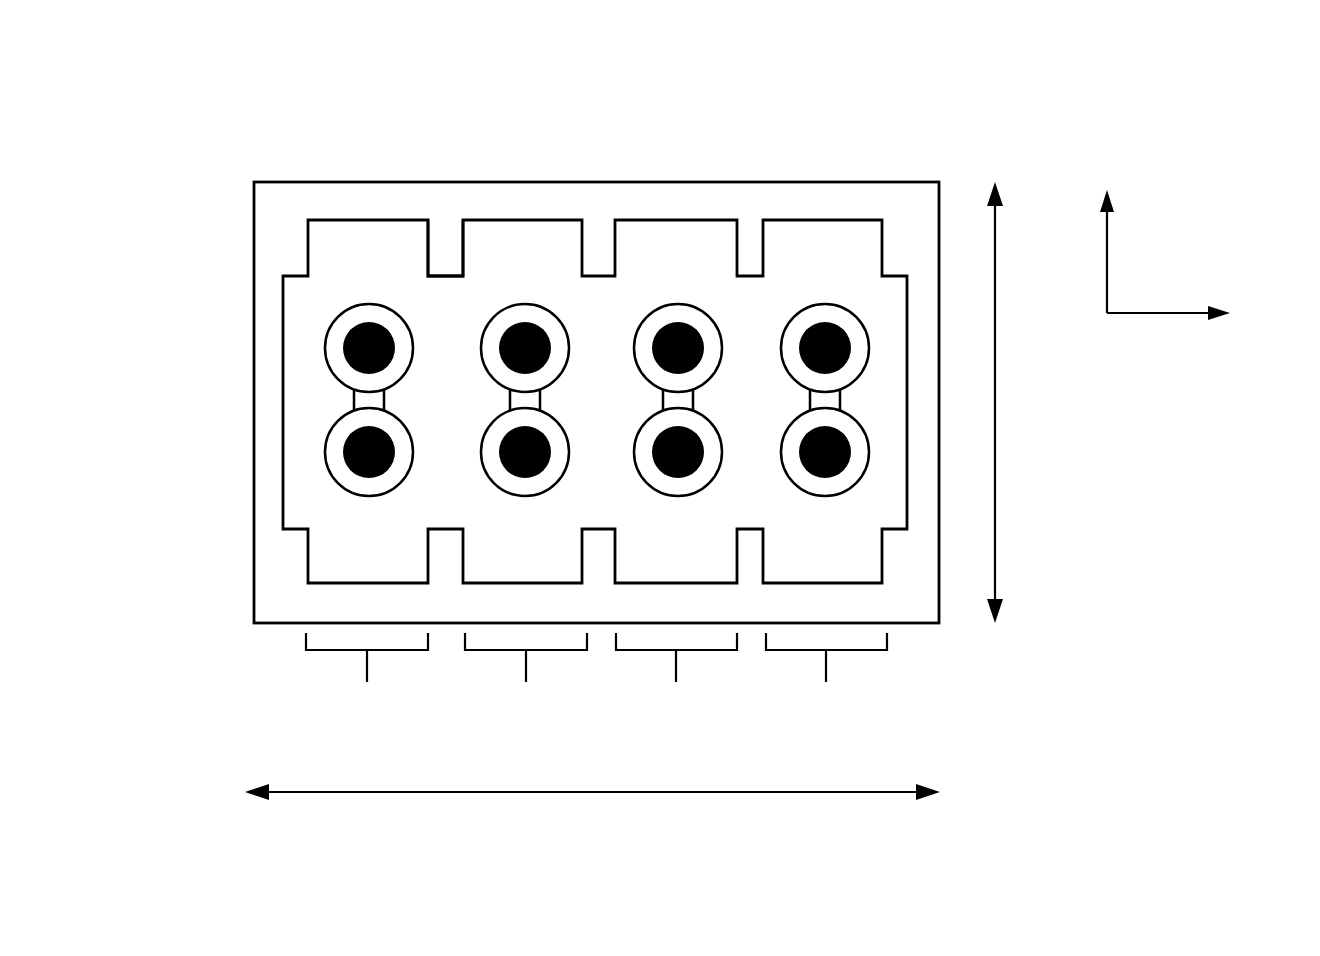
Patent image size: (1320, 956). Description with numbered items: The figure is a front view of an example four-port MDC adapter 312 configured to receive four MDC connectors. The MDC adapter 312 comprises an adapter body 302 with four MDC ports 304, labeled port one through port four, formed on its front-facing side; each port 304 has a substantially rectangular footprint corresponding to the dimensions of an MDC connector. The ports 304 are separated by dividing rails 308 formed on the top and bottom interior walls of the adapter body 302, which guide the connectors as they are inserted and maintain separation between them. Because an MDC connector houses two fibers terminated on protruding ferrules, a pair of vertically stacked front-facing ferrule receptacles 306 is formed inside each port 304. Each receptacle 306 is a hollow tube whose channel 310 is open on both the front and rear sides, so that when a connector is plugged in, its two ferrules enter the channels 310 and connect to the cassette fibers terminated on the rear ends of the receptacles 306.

The adapter body 302 is at (912, 180).
The MDC port 304 is at (370, 238).
The ferrule receptacle 306 is at (325, 342).
The dividing rail 308 is at (442, 242).
The channel 310 is at (347, 360).
The MDC adapter 312 is at (984, 71).